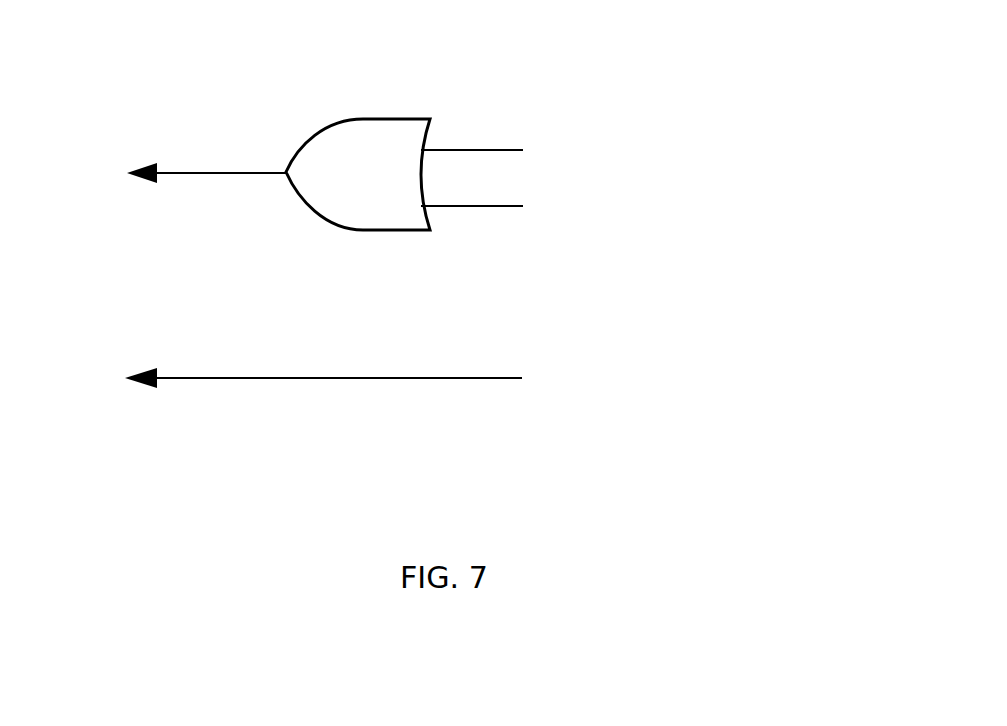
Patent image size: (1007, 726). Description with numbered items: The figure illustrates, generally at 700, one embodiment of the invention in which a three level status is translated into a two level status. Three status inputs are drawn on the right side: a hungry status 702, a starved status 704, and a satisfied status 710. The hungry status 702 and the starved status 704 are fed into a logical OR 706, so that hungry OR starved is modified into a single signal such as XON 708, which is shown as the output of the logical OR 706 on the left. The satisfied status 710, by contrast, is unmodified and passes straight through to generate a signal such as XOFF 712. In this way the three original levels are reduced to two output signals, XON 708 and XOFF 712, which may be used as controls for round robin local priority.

The level status embodiment 700 is at (718, 72).
The hungry status 702 is at (564, 149).
The starved status 704 is at (571, 206).
The logical OR 706 is at (358, 174).
The XON signal 708 is at (162, 194).
The satisfied status 710 is at (435, 376).
The XOFF signal 712 is at (89, 400).